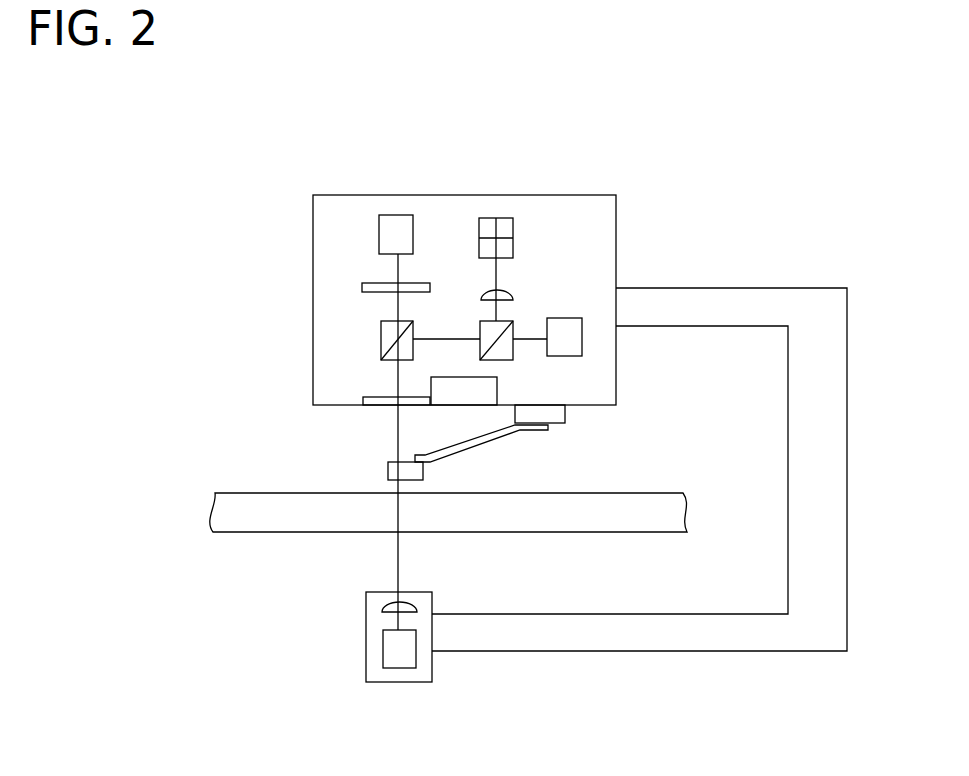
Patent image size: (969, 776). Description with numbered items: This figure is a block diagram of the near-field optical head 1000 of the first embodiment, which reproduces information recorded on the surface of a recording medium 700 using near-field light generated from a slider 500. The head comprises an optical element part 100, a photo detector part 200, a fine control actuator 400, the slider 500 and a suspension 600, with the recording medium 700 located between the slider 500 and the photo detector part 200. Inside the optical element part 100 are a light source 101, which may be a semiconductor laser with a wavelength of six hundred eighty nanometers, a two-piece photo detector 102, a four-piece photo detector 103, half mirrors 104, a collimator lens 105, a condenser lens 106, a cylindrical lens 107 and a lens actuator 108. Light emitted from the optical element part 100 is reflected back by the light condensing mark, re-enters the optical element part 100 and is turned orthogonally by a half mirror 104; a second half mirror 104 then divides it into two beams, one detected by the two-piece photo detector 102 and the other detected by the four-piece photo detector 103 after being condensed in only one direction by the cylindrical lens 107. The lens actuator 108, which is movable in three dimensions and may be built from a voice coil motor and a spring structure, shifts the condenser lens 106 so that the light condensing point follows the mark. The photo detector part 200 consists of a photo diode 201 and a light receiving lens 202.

The near-field optical head 1000 is at (108, 203).
The optical element part 100 is at (313, 195).
The light source 101 is at (398, 215).
The two-piece photo detector 102 is at (568, 318).
The four-piece photo detector 103 is at (507, 218).
The half mirror 104 is at (480, 328).
The collimator lens 105 is at (362, 284).
The condenser lens 106 is at (365, 398).
The cylindrical lens 107 is at (505, 290).
The lens actuator 108 is at (482, 397).
The fine control actuator 400 is at (553, 416).
The slider 500 is at (388, 468).
The suspension 600 is at (470, 443).
The recording medium 700 is at (260, 517).
The photo detector part 200 is at (432, 675).
The photo diode 201 is at (398, 641).
The light receiving lens 202 is at (385, 598).